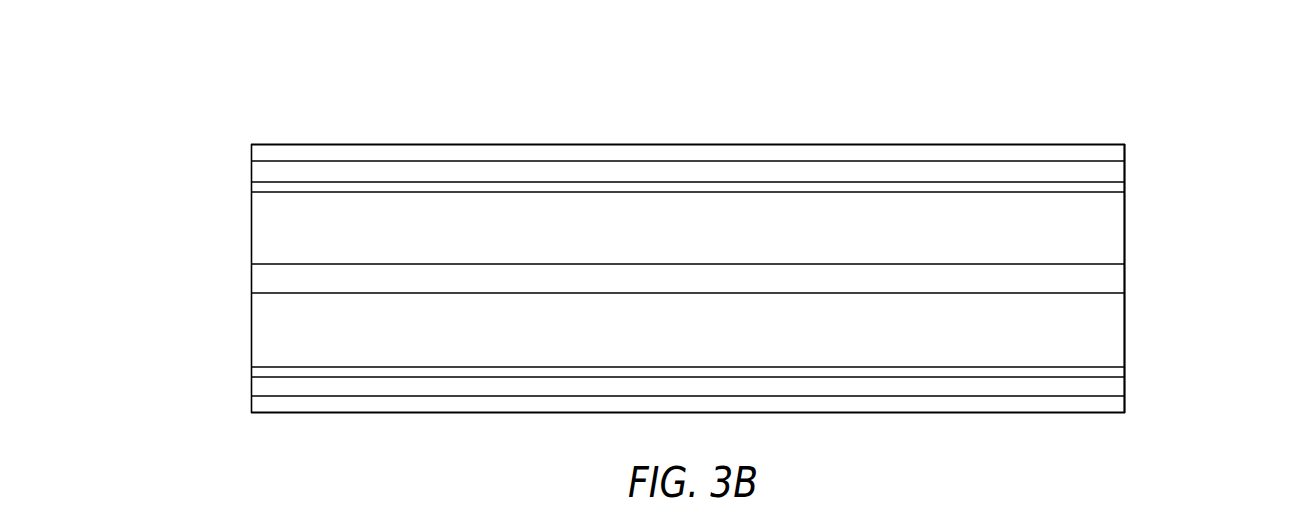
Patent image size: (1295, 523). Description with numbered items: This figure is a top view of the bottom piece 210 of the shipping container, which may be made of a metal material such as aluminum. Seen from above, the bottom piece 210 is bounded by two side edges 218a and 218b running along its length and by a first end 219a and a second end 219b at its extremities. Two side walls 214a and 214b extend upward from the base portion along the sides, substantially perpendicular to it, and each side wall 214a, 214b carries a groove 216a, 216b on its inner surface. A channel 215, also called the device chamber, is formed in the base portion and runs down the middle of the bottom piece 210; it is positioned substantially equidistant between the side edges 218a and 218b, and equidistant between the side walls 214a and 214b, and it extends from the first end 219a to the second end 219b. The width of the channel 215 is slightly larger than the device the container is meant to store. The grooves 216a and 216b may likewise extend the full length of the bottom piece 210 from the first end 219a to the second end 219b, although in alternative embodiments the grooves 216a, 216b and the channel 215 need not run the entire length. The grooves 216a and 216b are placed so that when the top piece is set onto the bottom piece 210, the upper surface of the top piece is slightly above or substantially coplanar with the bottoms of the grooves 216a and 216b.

The bottom piece 210 is at (1178, 102).
The side wall 214a is at (902, 150).
The side wall 214b is at (903, 388).
The channel 215 is at (1117, 278).
The groove 216a is at (1120, 171).
The groove 216b is at (1117, 370).
The side edge 218a is at (1043, 144).
The side edge 218b is at (1042, 413).
The first end 219a is at (1125, 321).
The second end 219b is at (251, 335).